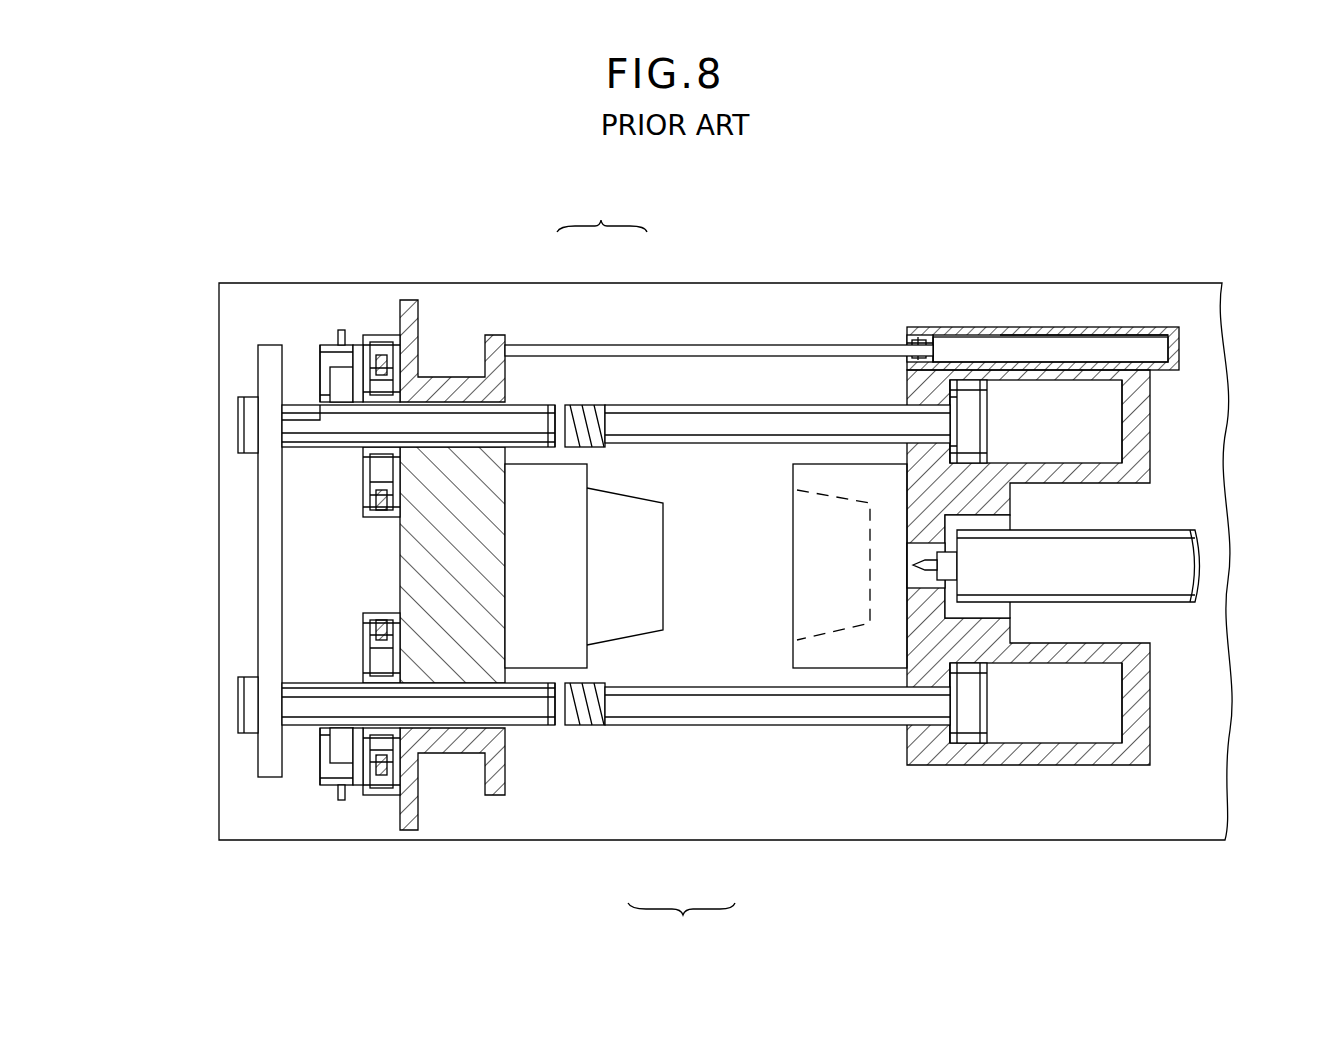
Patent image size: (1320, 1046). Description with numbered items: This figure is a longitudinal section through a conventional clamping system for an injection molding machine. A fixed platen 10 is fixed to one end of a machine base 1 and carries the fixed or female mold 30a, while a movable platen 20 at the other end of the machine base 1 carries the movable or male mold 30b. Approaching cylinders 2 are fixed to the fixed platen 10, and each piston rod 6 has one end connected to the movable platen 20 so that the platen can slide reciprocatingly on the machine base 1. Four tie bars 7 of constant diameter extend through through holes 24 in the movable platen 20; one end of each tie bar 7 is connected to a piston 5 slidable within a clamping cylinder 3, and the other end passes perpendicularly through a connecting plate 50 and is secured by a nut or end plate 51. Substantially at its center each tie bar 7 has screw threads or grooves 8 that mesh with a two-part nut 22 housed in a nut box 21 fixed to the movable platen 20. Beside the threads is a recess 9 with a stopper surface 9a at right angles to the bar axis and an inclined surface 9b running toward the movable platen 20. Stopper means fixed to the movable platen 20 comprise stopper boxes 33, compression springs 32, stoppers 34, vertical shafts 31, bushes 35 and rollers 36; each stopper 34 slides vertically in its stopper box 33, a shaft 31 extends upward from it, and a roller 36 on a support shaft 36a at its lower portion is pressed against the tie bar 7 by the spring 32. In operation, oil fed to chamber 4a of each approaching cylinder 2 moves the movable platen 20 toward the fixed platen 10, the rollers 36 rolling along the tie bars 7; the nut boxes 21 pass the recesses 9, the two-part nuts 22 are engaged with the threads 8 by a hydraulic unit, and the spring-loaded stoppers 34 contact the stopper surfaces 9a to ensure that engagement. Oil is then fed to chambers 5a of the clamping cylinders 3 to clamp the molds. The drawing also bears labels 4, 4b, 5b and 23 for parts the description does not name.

The machine base 1 is at (1028, 283).
The approaching cylinders 2 is at (1112, 356).
The clamping cylinders 3 is at (1072, 437).
The cylinder 4 is at (935, 350).
The chamber 4a is at (915, 335).
The cylinder wall 4b is at (1080, 345).
The piston 5 is at (968, 385).
The chambers 5a is at (950, 390).
The chamber wall 5b is at (1115, 400).
The piston rods 6 is at (718, 345).
The tie bars 7 is at (727, 412).
The screw threads or grooves 8 is at (585, 408).
The recess 9 is at (646, 568).
The stopper surface 9a is at (565, 408).
The inclined surface 9b is at (548, 405).
The fixed platen 10 is at (1000, 500).
The movable platen 20 is at (497, 515).
The nut boxes 21 is at (385, 338).
The two-part nuts 22 is at (470, 380).
The bearing ring 23 is at (420, 380).
The through holes 24 is at (495, 340).
The fixed or female mold 30a is at (797, 598).
The movable or male mold 30b is at (660, 515).
The shafts 31 is at (358, 345).
The compression springs 32 is at (341, 332).
The stopper boxes 33 is at (325, 350).
The stoppers 34 is at (333, 385).
The bushes 35 is at (316, 392).
The rollers 36 is at (320, 440).
The support shaft 36a is at (322, 408).
The connecting plate 50 is at (265, 352).
The nut or end plate 51 is at (245, 400).